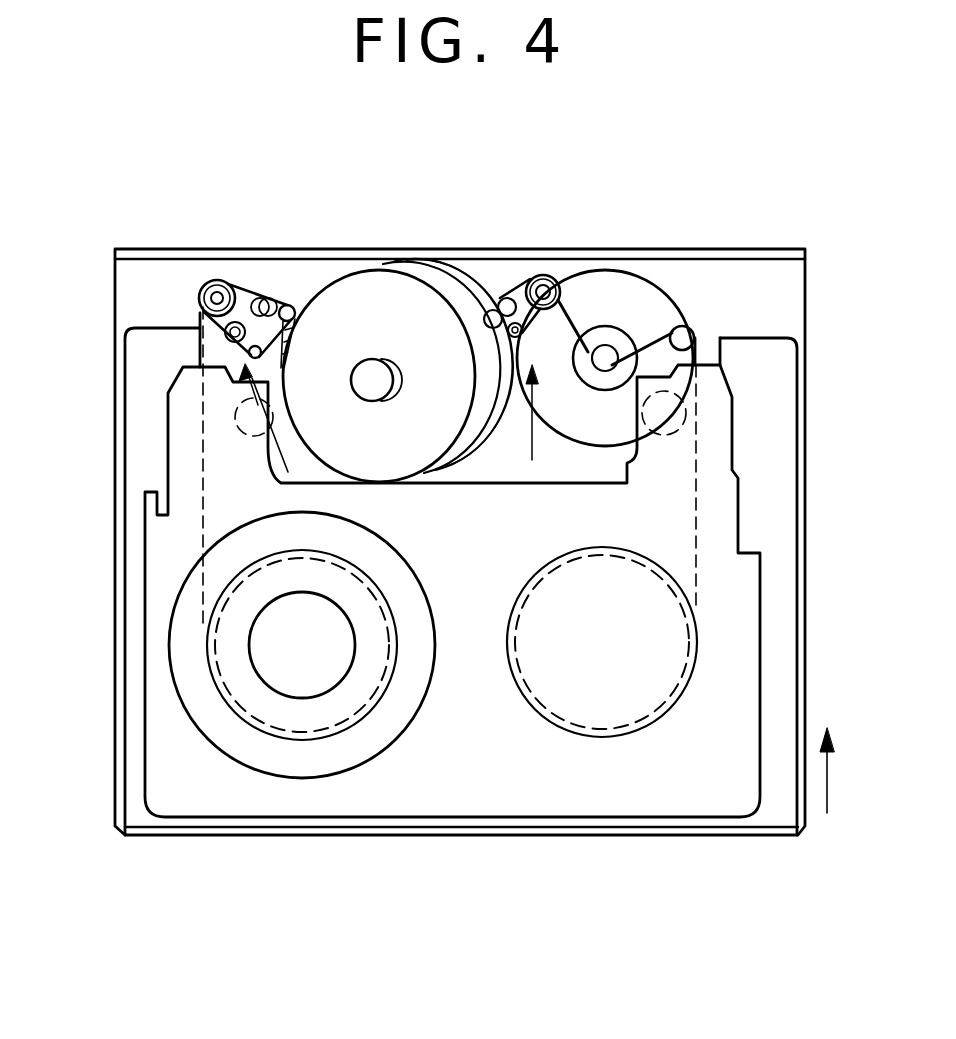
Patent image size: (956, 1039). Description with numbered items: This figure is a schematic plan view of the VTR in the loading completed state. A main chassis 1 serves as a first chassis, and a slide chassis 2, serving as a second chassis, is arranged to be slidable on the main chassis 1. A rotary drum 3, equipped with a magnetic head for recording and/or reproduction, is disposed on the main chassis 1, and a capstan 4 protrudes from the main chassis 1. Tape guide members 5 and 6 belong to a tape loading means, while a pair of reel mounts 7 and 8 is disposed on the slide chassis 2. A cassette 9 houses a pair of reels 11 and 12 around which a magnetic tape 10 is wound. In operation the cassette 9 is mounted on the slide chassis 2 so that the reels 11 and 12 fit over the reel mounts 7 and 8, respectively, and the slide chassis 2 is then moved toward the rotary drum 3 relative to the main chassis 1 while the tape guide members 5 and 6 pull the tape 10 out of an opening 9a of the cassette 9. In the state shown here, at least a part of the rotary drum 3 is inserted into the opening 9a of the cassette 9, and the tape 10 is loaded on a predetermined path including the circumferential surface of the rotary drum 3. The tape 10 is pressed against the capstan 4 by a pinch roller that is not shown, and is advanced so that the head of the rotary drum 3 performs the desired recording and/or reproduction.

The main chassis 1 is at (715, 288).
The slide chassis 2 is at (137, 811).
The rotary drum 3 is at (352, 300).
The capstan 4 is at (608, 355).
The tape guide member 5 is at (222, 278).
The tape guide member 6 is at (546, 275).
The reel mount 7 is at (257, 720).
The reel mount 8 is at (560, 727).
The cassette 9 is at (470, 777).
The opening 9a is at (478, 472).
The magnetic tape 10 is at (478, 347).
The reel 11 is at (337, 733).
The reel 12 is at (640, 730).